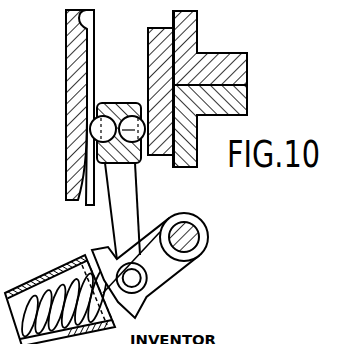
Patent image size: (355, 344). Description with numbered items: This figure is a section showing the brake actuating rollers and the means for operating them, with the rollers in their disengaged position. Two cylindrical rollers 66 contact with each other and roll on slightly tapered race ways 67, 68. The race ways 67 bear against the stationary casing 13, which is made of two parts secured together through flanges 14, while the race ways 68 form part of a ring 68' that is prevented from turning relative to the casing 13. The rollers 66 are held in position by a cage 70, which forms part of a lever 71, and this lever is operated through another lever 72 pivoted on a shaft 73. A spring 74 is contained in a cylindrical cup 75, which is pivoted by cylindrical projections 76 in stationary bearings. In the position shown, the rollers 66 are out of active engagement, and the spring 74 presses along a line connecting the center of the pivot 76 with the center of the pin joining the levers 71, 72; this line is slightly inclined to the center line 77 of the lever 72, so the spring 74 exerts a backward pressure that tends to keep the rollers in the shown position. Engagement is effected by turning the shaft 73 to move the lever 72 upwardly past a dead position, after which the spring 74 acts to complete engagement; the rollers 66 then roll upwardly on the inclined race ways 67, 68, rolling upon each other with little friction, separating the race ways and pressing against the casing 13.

The stationary casing 13 is at (186, 33).
The flanges 14 is at (238, 84).
The rollers 66 is at (110, 130).
The race ways 67 is at (145, 64).
The race ways 68 is at (94, 105).
The ring 68' is at (62, 105).
The cage 70 is at (120, 103).
The lever 71 is at (127, 198).
The lever 72 is at (167, 265).
The shaft 73 is at (207, 227).
The spring 74 is at (50, 290).
The cylindrical cup 75 is at (25, 287).
The cylindrical projections 76 is at (78, 282).
The center line 77 is at (150, 264).